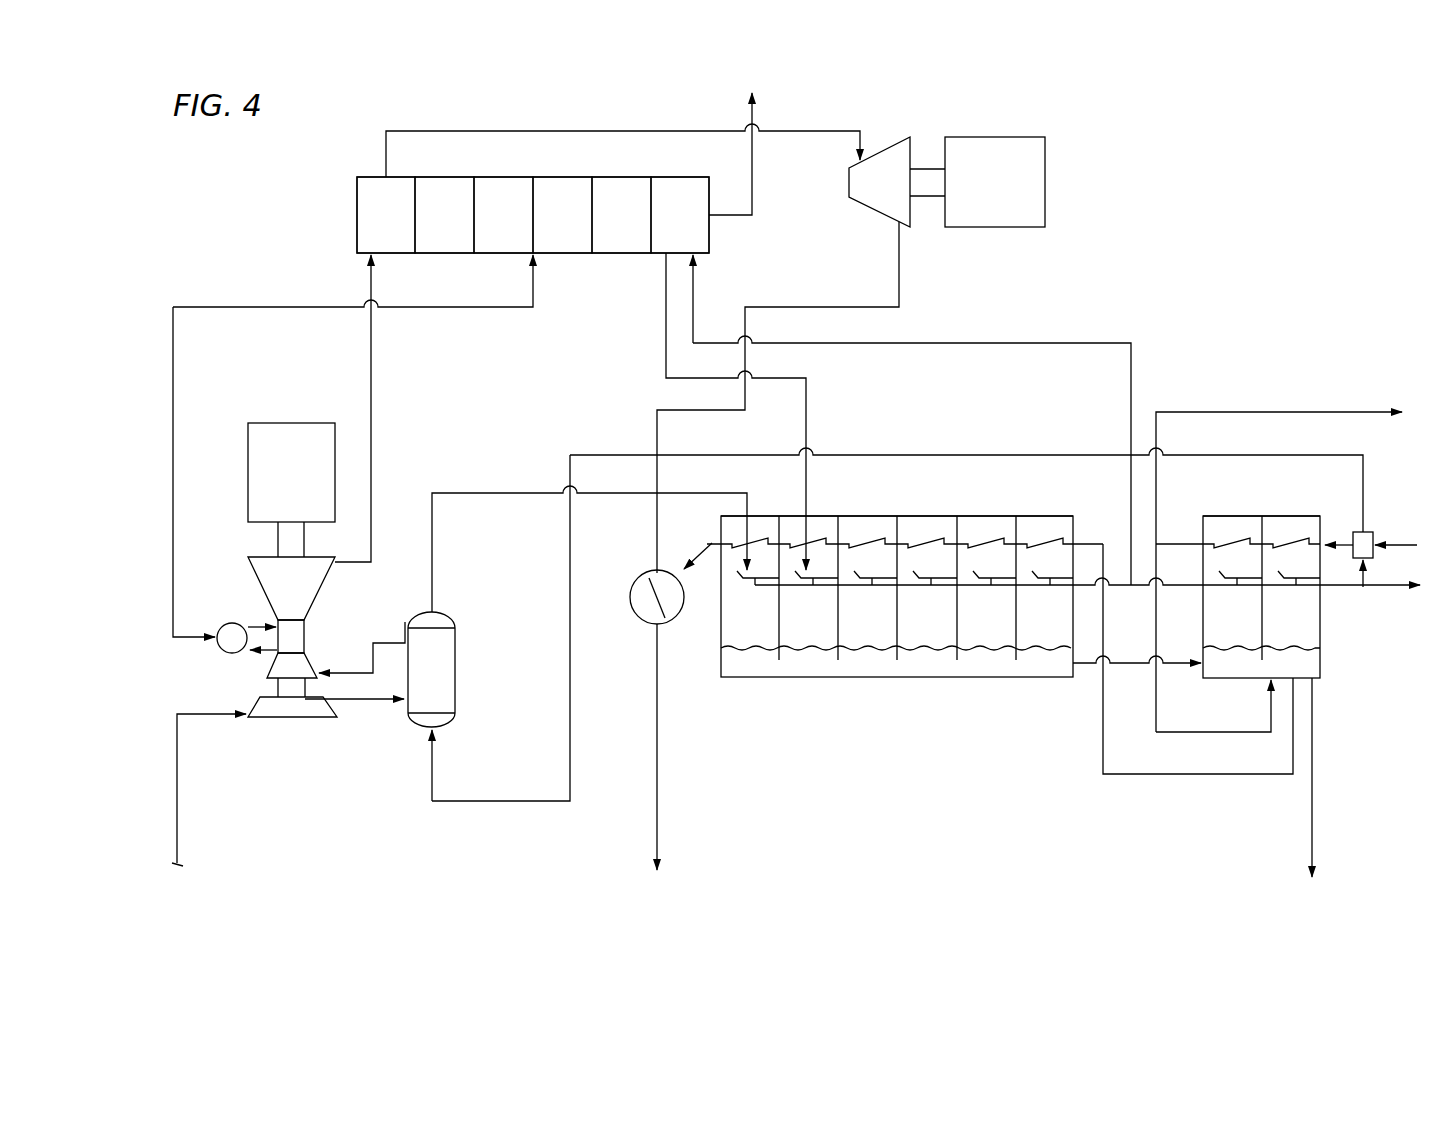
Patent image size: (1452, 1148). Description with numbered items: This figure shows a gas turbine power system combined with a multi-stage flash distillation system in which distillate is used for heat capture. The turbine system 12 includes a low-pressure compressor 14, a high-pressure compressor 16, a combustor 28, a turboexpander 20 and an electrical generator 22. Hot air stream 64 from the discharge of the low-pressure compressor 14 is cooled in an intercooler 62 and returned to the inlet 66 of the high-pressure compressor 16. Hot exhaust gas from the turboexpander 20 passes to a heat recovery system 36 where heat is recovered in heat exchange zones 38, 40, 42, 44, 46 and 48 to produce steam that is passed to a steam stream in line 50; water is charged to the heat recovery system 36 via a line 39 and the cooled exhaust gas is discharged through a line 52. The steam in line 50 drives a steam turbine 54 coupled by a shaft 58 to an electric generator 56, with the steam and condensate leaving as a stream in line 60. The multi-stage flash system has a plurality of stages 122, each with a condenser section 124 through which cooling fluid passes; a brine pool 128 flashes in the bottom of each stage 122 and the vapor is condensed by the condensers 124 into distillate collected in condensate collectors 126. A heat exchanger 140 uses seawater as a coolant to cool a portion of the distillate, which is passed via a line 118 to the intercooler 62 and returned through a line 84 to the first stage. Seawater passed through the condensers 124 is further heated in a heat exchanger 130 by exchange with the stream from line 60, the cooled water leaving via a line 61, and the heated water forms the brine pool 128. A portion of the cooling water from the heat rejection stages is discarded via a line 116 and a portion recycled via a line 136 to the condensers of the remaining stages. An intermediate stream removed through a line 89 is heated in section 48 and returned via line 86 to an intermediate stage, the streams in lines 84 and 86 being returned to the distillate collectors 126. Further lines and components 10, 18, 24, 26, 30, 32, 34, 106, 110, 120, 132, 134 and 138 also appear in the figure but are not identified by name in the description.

The system 10 is at (1082, 288).
The turbine system 12 is at (333, 598).
The low-pressure compressor 14 is at (300, 720).
The high-pressure compressor 16 is at (300, 670).
The drive shaft 18 is at (282, 543).
The turboexpander 20 is at (258, 568).
The electrical generator 22 is at (280, 422).
The vapor inlet line 24 is at (178, 795).
The line 26 is at (173, 412).
The combustor 28 is at (222, 655).
The line 30 is at (265, 655).
The pump 32 is at (258, 623).
The line 34 is at (371, 335).
The heat recovery system 36 is at (343, 200).
The heat exchange zone 38 is at (399, 227).
The line 39 is at (455, 305).
The heat exchange zone 40 is at (458, 227).
The heat exchange zone 42 is at (517, 227).
The heat exchange zone 44 is at (576, 227).
The heat exchange zone 46 is at (635, 227).
The heat exchange zone 48 is at (693, 227).
The line 50 is at (528, 128).
The line 52 is at (753, 192).
The steam turbine 54 is at (885, 208).
The electric generator 56 is at (1042, 170).
The shaft 58 is at (928, 193).
The line 60 is at (655, 430).
The line 61 is at (660, 805).
The intercooler 62 is at (452, 683).
The hot air stream 64 is at (358, 703).
The inlet 66 is at (395, 643).
The line 84 is at (523, 490).
The line 86 is at (658, 338).
The line 89 is at (1005, 340).
The concentrate outlet line 106 is at (1313, 838).
The line 110 is at (1345, 588).
The line 116 is at (1262, 410).
The line 118 is at (1017, 453).
The evaporator 120 is at (925, 503).
The stage 122 is at (768, 515).
The condenser section 124 is at (740, 550).
The condensate collector 126 is at (740, 578).
The brine pool 128 is at (752, 667).
The heat exchanger 130 is at (632, 588).
The transfer line 132 is at (1085, 672).
The line 134 is at (1212, 735).
The line 136 is at (1182, 777).
The line 138 is at (1368, 575).
The heat exchanger 140 is at (1373, 532).